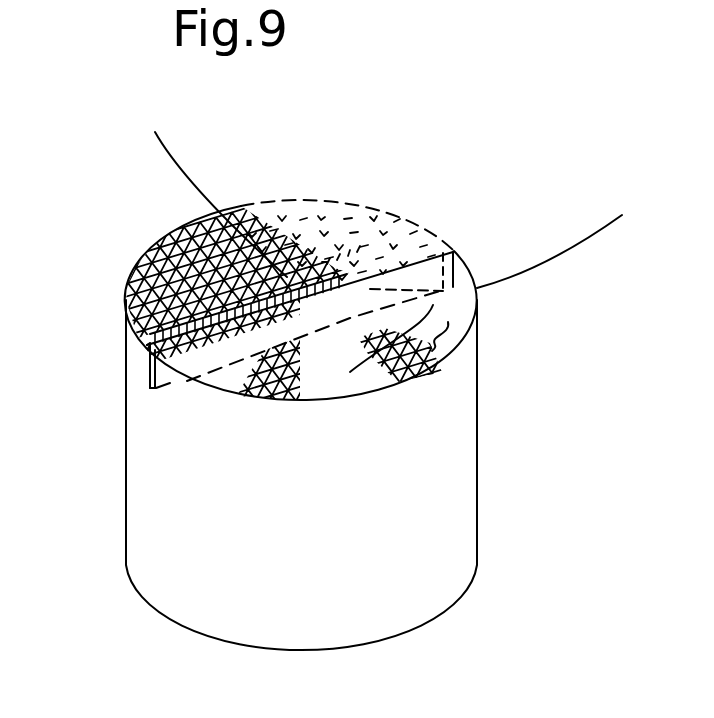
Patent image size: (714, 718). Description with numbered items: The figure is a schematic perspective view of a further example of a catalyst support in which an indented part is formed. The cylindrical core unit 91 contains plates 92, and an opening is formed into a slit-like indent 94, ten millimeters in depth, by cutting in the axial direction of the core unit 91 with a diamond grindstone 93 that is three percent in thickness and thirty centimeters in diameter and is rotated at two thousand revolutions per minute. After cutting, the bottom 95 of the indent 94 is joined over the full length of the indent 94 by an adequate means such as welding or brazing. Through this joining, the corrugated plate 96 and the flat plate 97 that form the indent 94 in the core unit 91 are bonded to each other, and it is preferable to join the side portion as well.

The core unit 91 is at (450, 532).
The plates 92 is at (147, 258).
The diamond grindstone 93 is at (193, 150).
The indent 94 is at (148, 350).
The bottom of the indent 95 is at (152, 388).
The corrugated plate 96 is at (437, 360).
The flat plate 97 is at (433, 313).